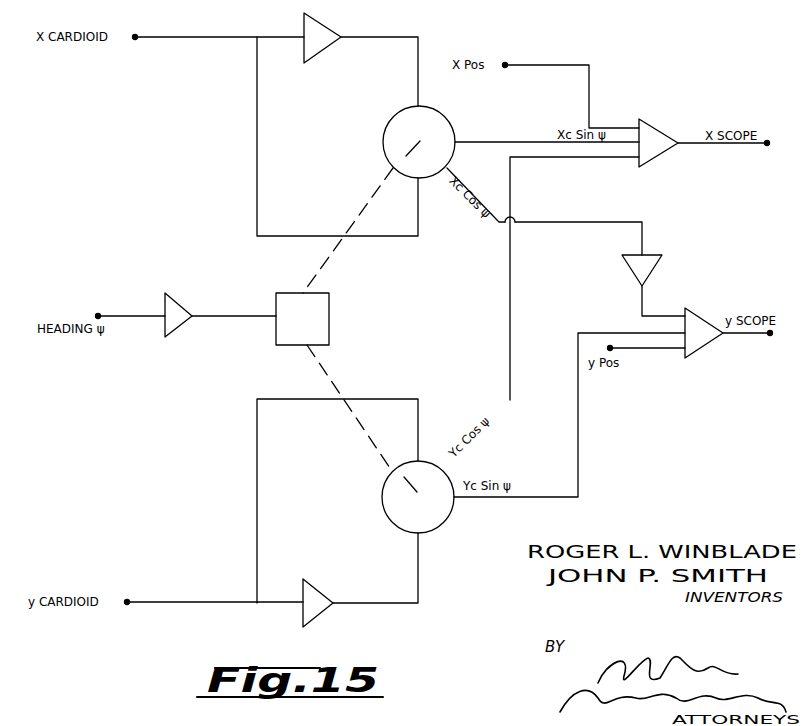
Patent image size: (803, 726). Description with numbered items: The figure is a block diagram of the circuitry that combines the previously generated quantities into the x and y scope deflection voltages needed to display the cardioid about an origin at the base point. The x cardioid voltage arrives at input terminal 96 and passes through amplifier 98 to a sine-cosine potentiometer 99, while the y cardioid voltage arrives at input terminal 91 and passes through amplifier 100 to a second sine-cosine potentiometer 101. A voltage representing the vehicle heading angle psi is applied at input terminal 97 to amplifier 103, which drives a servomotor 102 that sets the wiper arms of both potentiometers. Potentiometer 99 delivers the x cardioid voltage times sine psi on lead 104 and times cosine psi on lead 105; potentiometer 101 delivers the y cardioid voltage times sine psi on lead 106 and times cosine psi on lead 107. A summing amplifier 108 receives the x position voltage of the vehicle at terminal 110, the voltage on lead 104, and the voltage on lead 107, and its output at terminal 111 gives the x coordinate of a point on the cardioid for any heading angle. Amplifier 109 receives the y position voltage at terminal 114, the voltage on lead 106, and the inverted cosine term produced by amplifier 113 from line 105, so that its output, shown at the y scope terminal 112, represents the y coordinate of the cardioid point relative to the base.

The input terminal 91 is at (128, 604).
The input terminal 96 is at (136, 35).
The input terminal 97 is at (100, 313).
The amplifier 98 is at (327, 28).
The sine-cosine potentiometer 99 is at (441, 115).
The amplifier 100 is at (323, 608).
The sine-cosine potentiometer 101 is at (440, 525).
The servomotor 102 is at (329, 313).
The amplifier 103 is at (183, 306).
The lead 104 is at (510, 142).
The lead 105 is at (557, 222).
The lead 106 is at (579, 461).
The lead 107 is at (512, 279).
The summing amplifier 108 is at (657, 131).
The amplifier 109 is at (703, 321).
The terminal 110 is at (507, 63).
The terminal 111 is at (767, 146).
The y scope output terminal 112 is at (770, 336).
The amplifier 113 is at (653, 261).
The terminal 114 is at (612, 349).